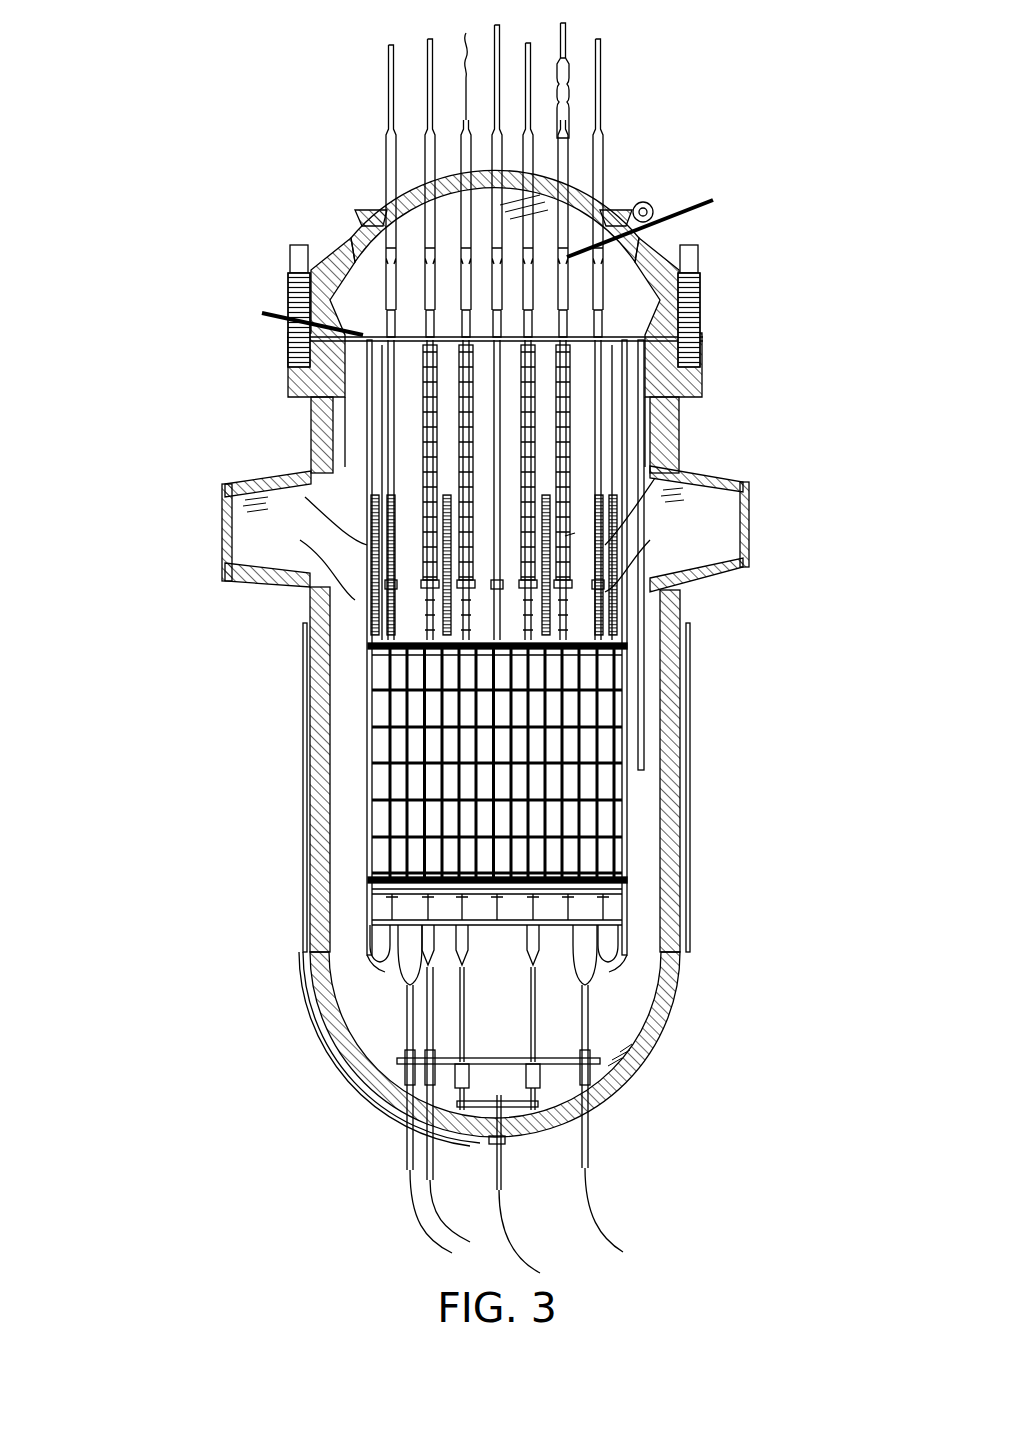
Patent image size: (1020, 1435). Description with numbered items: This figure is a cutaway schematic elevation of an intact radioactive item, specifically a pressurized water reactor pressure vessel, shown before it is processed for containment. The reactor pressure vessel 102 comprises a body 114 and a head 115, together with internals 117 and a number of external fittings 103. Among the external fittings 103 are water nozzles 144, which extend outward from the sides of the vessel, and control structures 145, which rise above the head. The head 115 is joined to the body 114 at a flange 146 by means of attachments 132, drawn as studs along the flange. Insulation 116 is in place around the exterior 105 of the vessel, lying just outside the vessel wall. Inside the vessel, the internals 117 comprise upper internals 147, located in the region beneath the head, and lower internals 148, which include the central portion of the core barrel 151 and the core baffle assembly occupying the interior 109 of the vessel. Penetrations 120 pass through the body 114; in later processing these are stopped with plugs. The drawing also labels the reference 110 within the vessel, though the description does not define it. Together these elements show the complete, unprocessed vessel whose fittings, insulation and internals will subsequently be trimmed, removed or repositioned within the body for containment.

The reactor pressure vessel 102 is at (172, 228).
The external fittings 103 is at (605, 185).
The exterior 105 is at (672, 1000).
The interior 109 is at (570, 535).
The plenum 110 is at (342, 316).
The body 114 is at (305, 600).
The head 115 is at (343, 255).
The insulation 116 is at (303, 740).
The internals 117 is at (385, 533).
The penetrations 120 is at (245, 548).
The attachments 132 is at (300, 247).
The water nozzles 144 is at (265, 473).
The control structures 145 is at (430, 97).
The flange 146 is at (288, 367).
The upper internals 147 is at (620, 460).
The lower internals 148 is at (530, 823).
The core barrel 151 is at (657, 830).